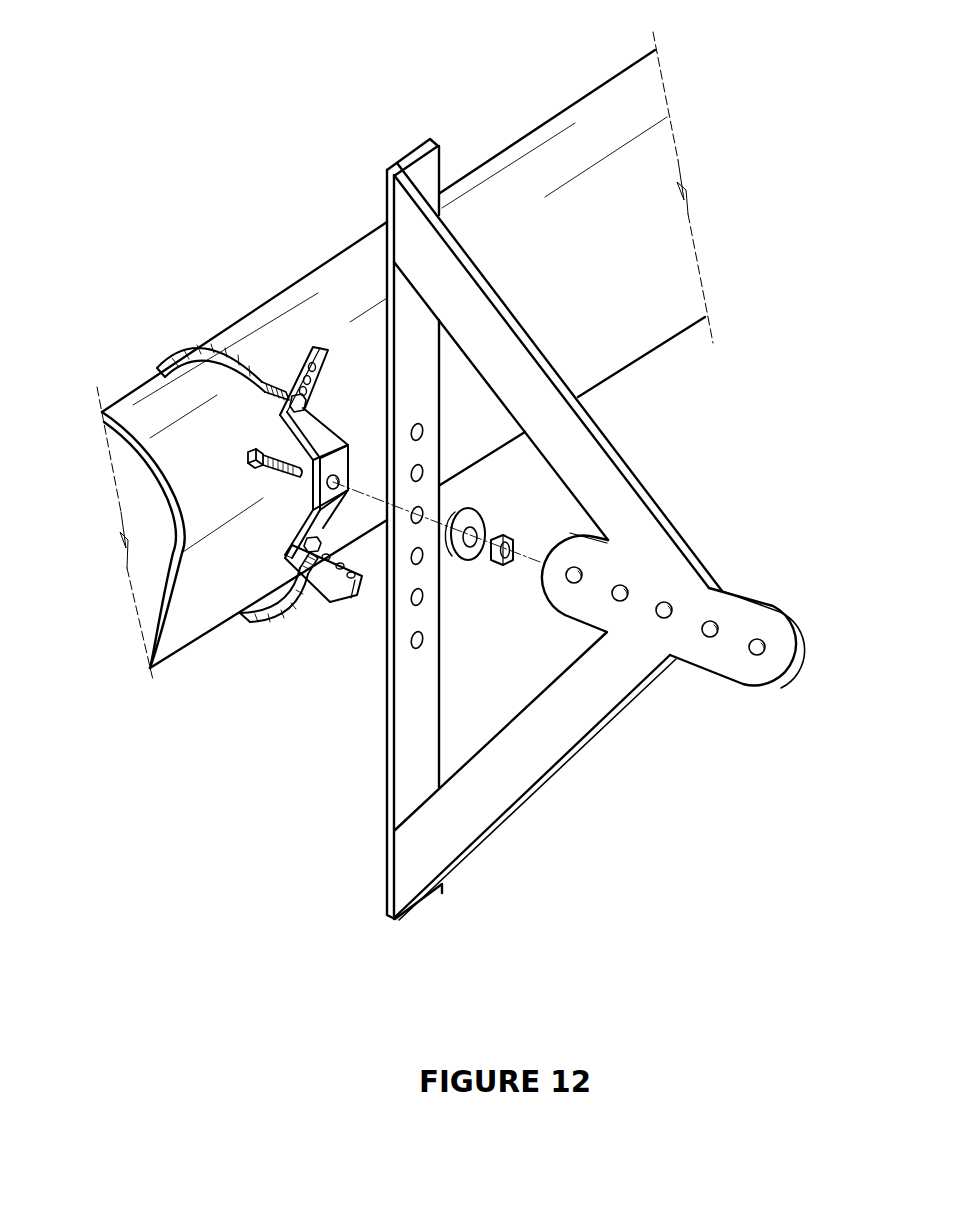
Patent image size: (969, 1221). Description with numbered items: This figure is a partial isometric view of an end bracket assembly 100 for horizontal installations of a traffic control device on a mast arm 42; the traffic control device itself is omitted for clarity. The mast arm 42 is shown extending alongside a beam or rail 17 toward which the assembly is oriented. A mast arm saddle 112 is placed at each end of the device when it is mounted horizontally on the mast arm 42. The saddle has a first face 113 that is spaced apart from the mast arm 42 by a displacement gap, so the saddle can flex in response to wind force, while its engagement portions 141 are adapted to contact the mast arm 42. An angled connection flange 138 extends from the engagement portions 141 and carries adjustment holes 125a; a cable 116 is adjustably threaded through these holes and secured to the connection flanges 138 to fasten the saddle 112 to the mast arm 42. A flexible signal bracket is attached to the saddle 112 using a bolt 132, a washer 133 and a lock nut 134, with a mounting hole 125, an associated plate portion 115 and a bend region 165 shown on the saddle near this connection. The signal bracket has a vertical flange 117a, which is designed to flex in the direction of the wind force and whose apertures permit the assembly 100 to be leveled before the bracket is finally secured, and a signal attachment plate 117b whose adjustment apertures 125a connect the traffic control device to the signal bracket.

The end bracket assembly 100 is at (508, 108).
The beam 17 is at (412, 157).
The mast arm 42 is at (128, 393).
The mast arm saddle 112 is at (262, 569).
The first face 113 is at (304, 468).
The mounting plate portion 115 is at (352, 444).
The cable 116 is at (219, 461).
The vertical flange 117a is at (531, 529).
The signal attachment plate 117b is at (756, 600).
The mounting hole 125 is at (342, 476).
The adjustment holes 125a is at (322, 555).
The bolt 132 is at (257, 448).
The washer 133 is at (468, 555).
The lock nut 134 is at (502, 535).
The angled connection flange 138 is at (320, 345).
The engagement portions 141 is at (278, 414).
The bend portion 165 is at (305, 497).